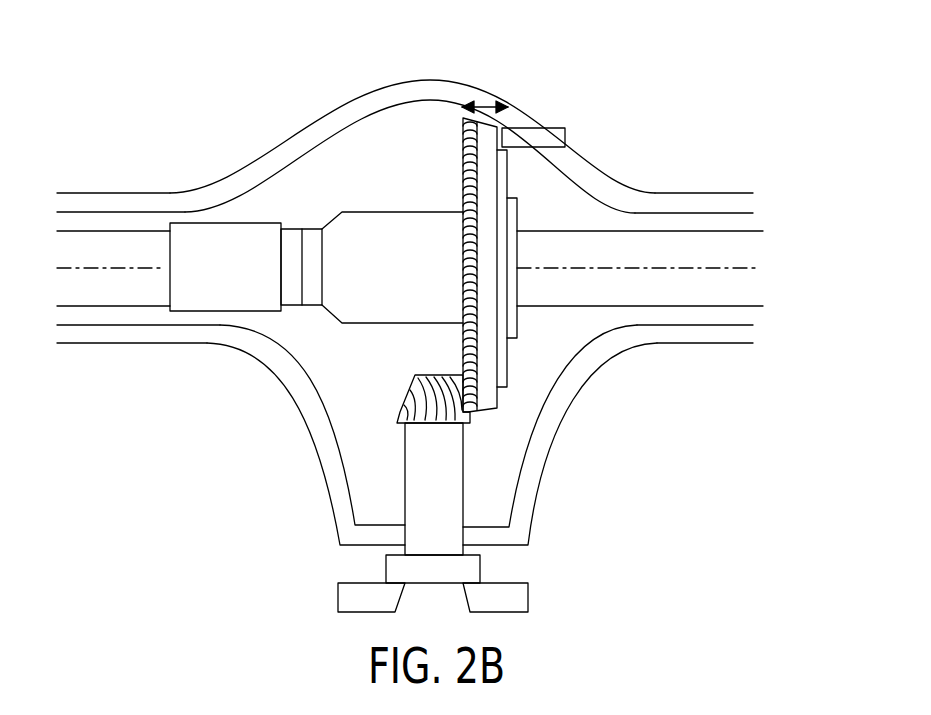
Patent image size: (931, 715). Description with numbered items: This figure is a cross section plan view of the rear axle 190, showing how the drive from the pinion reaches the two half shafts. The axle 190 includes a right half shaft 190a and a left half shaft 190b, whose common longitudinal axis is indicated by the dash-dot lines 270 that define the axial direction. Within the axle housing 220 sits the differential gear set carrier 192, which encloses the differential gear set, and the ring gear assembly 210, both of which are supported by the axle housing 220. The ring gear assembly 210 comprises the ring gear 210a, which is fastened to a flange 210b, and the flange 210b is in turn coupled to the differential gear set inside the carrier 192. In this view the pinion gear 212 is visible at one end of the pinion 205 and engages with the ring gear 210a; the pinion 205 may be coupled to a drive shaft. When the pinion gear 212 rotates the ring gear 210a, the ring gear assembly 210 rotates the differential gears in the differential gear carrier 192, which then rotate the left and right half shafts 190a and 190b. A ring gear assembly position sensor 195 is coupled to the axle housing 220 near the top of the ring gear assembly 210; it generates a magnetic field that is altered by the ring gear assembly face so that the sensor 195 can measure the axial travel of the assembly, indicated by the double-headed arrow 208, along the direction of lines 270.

The axle 190 is at (585, 430).
The right half shaft 190a is at (132, 304).
The left half shaft 190b is at (713, 306).
The differential gear set carrier 192 is at (350, 210).
The ring gear assembly position sensor 195 is at (543, 127).
The pinion 205 is at (423, 470).
The arrow indicating axial travel 208 is at (483, 105).
The ring gear assembly 210 is at (435, 259).
The ring gear 210a is at (490, 160).
The flange 210b is at (507, 175).
The pinion gear 212 is at (400, 407).
The axle housing 220 is at (735, 193).
The lines indicating axial direction 270 is at (96, 267).